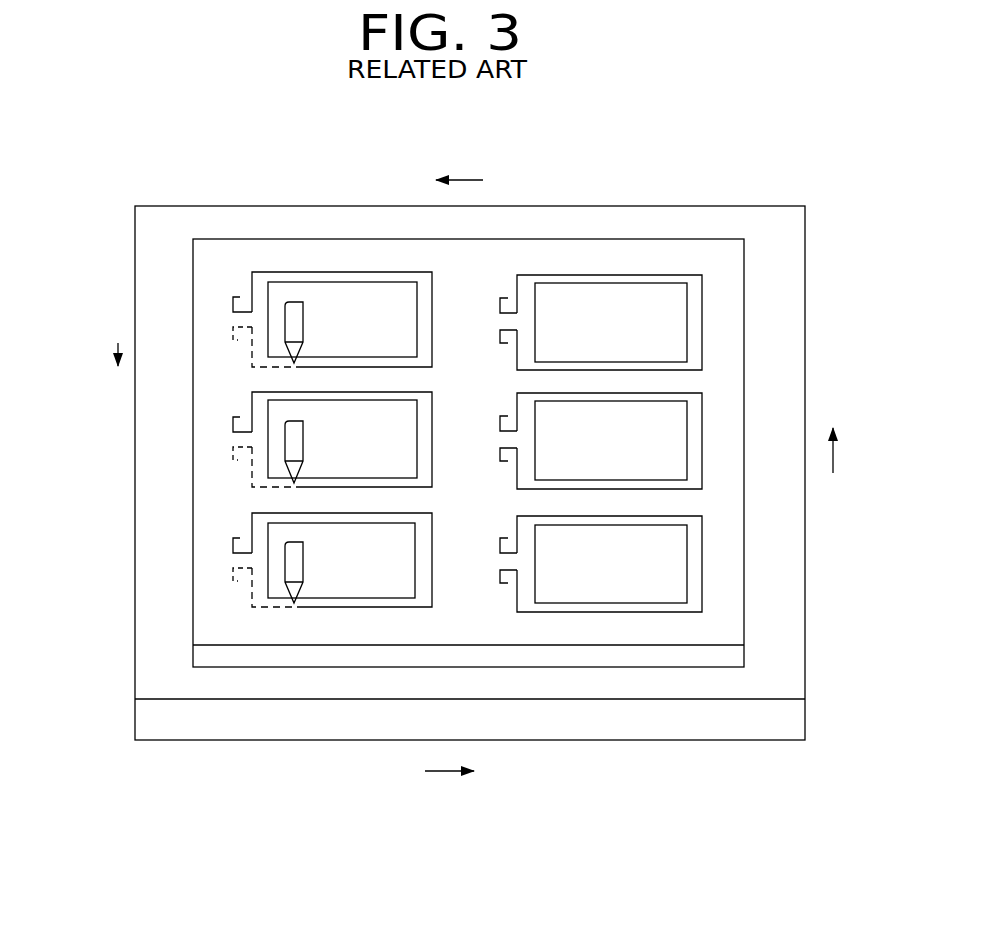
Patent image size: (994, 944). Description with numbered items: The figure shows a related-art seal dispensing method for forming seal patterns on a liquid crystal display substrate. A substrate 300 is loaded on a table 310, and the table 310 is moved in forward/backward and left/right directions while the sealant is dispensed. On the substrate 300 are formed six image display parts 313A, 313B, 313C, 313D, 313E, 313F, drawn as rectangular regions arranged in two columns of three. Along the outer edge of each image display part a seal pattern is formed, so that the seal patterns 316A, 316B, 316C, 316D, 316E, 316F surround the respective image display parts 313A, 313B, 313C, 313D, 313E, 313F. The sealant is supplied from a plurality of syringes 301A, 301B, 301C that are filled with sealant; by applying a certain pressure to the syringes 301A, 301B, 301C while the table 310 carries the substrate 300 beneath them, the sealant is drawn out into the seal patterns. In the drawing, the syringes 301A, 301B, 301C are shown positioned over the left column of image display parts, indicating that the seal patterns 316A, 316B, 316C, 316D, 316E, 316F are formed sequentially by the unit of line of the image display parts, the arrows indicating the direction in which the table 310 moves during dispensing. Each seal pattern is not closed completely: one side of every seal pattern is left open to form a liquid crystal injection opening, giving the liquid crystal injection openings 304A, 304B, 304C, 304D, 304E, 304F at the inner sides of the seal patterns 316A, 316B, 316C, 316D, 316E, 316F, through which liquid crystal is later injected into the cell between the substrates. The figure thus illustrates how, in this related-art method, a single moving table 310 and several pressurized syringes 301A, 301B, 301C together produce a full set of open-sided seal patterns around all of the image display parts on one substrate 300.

The substrate 300 is at (727, 660).
The table 310 is at (782, 724).
The image display part 313A is at (633, 334).
The image display part 313B is at (611, 440).
The image display part 313C is at (632, 575).
The image display part 313D is at (372, 333).
The image display part 313E is at (372, 450).
The image display part 313F is at (372, 572).
The seal pattern 316A is at (642, 275).
The seal pattern 316B is at (642, 392).
The seal pattern 316C is at (642, 516).
The seal pattern 316D is at (290, 271).
The seal pattern 316E is at (290, 389).
The seal pattern 316F is at (293, 512).
The liquid crystal injection opening 304A is at (486, 312).
The liquid crystal injection opening 304B is at (490, 452).
The liquid crystal injection opening 304C is at (491, 570).
The liquid crystal injection opening 304D is at (222, 316).
The liquid crystal injection opening 304E is at (222, 434).
The liquid crystal injection opening 304F is at (222, 557).
The syringe 301A is at (283, 335).
The syringe 301B is at (283, 456).
The syringe 301C is at (288, 575).